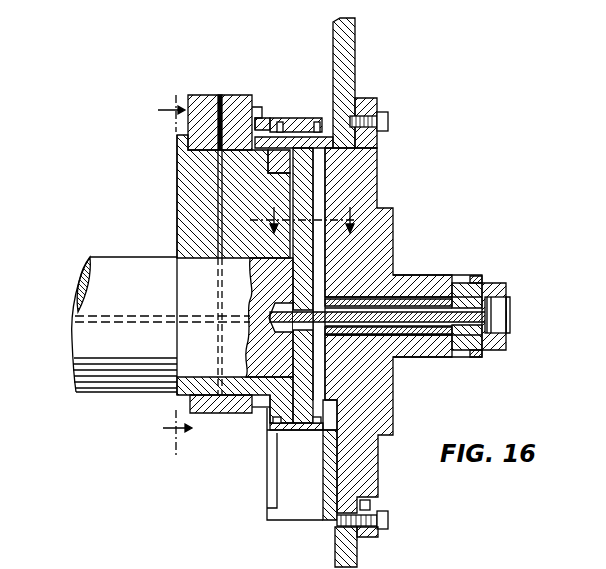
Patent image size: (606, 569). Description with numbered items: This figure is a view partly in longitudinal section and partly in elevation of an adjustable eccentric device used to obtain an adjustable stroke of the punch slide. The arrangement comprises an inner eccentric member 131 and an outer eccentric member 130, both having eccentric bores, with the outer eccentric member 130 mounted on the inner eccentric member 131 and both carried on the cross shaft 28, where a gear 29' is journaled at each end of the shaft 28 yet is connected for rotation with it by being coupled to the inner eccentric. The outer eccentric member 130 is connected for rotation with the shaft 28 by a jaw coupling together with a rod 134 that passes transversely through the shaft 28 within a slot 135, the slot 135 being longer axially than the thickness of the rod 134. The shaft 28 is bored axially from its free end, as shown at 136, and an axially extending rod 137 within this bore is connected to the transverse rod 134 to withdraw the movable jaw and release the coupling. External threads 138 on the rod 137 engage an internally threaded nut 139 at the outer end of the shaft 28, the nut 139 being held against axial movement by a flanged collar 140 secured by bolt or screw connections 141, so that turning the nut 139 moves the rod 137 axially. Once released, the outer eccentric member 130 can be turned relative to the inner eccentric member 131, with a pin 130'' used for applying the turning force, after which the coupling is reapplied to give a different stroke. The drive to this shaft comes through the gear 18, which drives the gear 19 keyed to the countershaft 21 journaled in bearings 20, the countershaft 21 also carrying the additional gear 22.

The gear 18 is at (172, 275).
The gear 19 is at (219, 95).
The bearings 20 is at (262, 362).
The countershaft 21 is at (305, 421).
The additional gear 22 is at (310, 274).
The cross shaft 28 is at (122, 270).
The gear 29' is at (342, 533).
The outer eccentric member 130 is at (221, 419).
The clamp plate assembly 130'' is at (292, 124).
The inner eccentric member 131 is at (180, 196).
The rod 134 is at (305, 191).
The slot 135 is at (326, 245).
The axial bore 136 is at (423, 308).
The axially extending rod 137 is at (406, 324).
The external threads 138 is at (445, 328).
The internally threaded nut 139 is at (490, 348).
The flanged collar 140 is at (485, 281).
The bolt or screw connections 141 is at (500, 285).